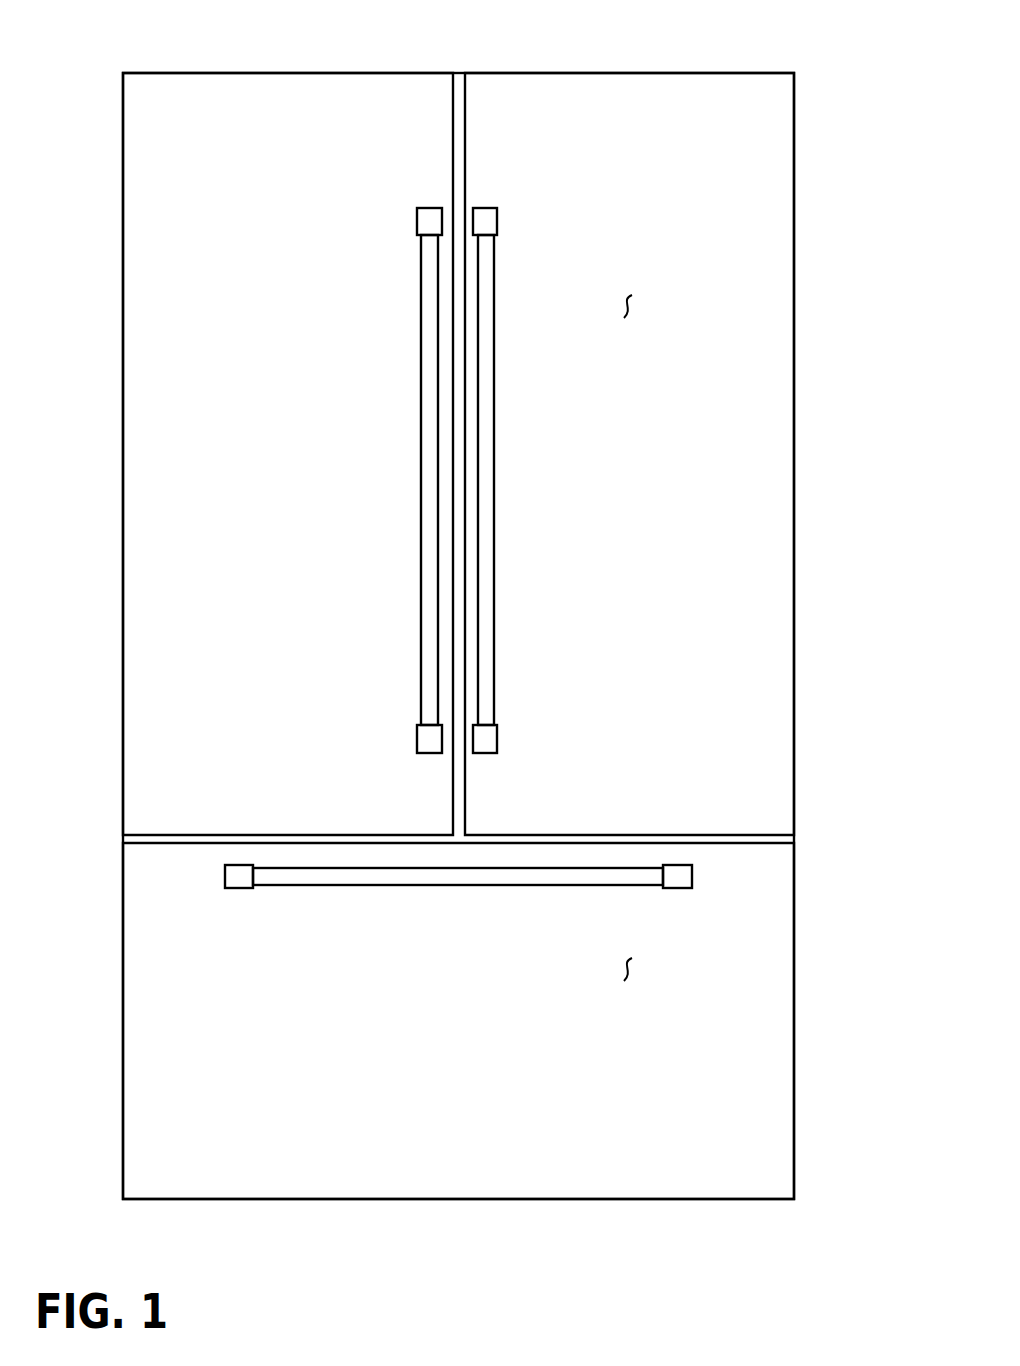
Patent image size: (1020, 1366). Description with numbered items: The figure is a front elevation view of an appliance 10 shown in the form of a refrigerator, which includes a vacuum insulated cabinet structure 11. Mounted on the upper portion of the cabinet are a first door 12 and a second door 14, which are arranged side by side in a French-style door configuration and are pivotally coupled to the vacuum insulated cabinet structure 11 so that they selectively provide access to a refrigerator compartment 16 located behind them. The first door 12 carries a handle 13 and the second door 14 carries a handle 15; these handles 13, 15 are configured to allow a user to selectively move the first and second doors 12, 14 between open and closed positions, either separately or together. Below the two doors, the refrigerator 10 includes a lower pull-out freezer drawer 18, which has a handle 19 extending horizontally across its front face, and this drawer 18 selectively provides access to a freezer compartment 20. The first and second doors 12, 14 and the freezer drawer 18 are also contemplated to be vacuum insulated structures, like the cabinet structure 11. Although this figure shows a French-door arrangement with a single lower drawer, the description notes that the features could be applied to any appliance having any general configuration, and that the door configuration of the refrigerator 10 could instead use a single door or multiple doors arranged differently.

The appliance 10 is at (461, 599).
The vacuum insulated cabinet structure 11 is at (833, 118).
The first door 12 is at (237, 583).
The handle 13 is at (430, 263).
The second door 14 is at (683, 527).
The handle 15 is at (483, 263).
The refrigerator compartment 16 is at (633, 305).
The lower pull-out freezer drawer 18 is at (687, 1045).
The handle 19 is at (317, 877).
The freezer compartment 20 is at (633, 968).